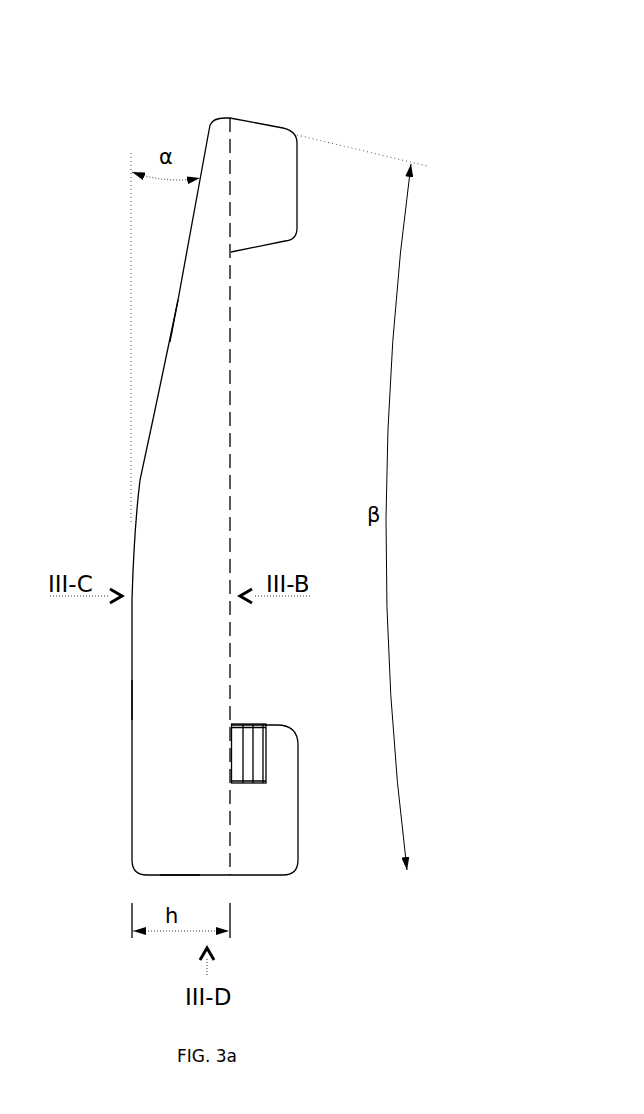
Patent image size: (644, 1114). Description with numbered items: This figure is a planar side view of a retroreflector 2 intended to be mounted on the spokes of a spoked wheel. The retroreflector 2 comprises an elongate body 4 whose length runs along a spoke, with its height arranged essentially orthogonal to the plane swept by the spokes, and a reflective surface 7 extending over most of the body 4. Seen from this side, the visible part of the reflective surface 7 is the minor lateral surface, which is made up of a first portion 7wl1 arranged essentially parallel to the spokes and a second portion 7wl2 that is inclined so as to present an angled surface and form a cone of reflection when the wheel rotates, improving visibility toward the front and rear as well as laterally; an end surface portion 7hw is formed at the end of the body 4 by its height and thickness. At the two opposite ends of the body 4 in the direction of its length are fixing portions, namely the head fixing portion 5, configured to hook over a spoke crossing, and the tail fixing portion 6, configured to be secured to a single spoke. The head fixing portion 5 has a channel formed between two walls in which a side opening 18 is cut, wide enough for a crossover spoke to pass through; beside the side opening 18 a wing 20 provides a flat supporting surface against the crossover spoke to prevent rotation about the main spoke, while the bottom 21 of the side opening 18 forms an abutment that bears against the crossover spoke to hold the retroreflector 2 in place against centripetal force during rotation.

The retroreflector 2 is at (213, 447).
The body 4 is at (250, 507).
The head fixing portion 5 is at (282, 718).
The tail fixing portion 6 is at (276, 248).
The reflective surface 7 is at (170, 492).
The side opening 18 is at (303, 739).
The wing 20 is at (242, 760).
The bottom of the side opening 21 is at (251, 788).
The first portion of the minor lateral surface 7wl1 is at (130, 702).
The second portion of the minor lateral surface 7wl2 is at (168, 342).
The end surface portion 7hw is at (180, 879).